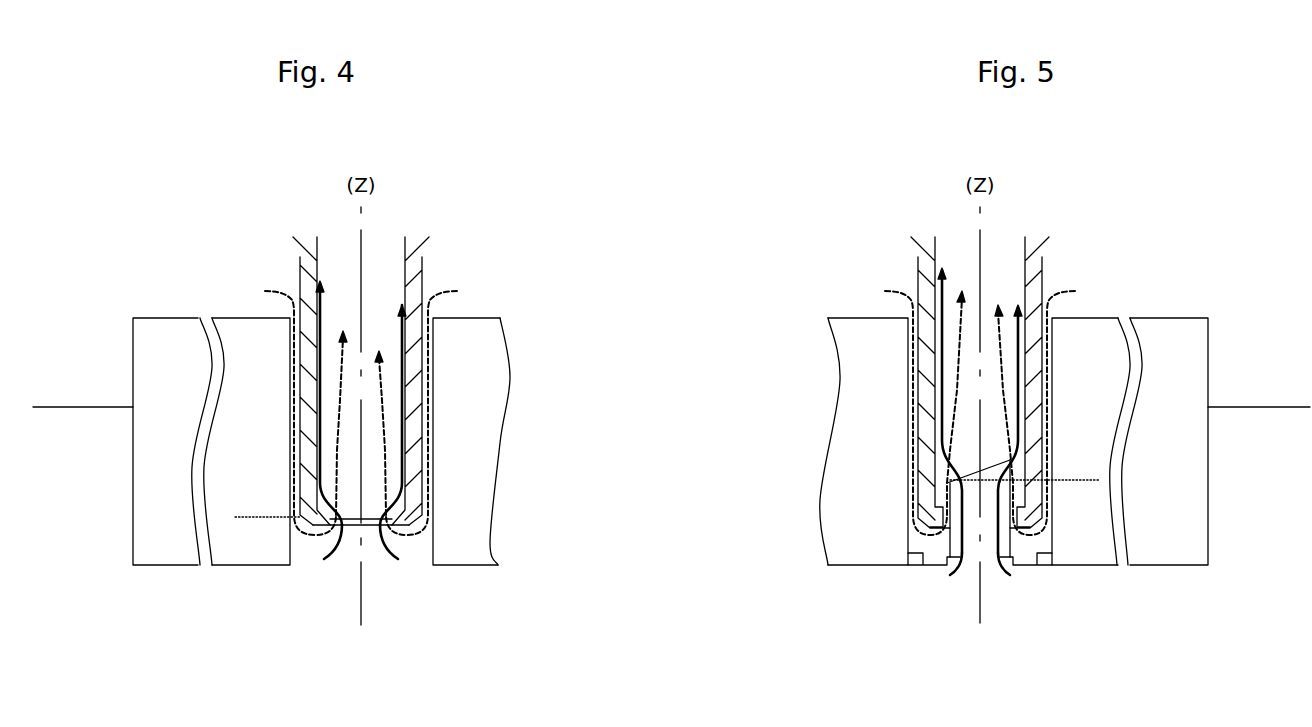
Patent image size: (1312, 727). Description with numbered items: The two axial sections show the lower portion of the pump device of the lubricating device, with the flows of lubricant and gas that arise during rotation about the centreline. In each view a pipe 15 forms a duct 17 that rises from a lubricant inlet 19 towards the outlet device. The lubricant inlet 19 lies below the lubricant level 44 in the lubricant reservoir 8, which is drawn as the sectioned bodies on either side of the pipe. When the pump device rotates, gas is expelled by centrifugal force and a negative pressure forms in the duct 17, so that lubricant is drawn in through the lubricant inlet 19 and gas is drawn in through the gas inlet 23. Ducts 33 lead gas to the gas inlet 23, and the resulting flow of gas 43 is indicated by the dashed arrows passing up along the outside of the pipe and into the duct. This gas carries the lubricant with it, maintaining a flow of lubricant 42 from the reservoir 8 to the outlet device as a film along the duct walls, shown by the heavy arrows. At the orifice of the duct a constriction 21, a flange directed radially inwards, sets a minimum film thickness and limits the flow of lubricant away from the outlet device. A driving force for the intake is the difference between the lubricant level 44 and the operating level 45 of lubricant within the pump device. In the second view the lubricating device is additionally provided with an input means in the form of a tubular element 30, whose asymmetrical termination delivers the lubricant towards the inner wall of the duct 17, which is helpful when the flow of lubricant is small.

In FIG. 4, the lubricant reservoir 8 is at (290, 441).
In FIG. 5, the lubricant reservoir 8 is at (1043, 441).
In FIG. 4, the pipe 15 is at (413, 392).
In FIG. 5, the pipe 15 is at (927, 378).
In FIG. 4, the duct 17 is at (377, 444).
In FIG. 5, the duct 17 is at (973, 400).
In FIG. 4, the lubricant inlet 19 is at (367, 535).
In FIG. 5, the lubricant inlet 19 is at (980, 545).
In FIG. 4, the constriction 21 is at (397, 517).
In FIG. 5, the constriction 21 is at (947, 523).
In FIG. 4, the gas inlet 23 is at (365, 530).
In FIG. 5, the gas inlet 23 is at (947, 527).
In FIG. 5, the tubular element 30 is at (975, 592).
In FIG. 4, the ducts 33 is at (430, 352).
In FIG. 5, the ducts 33 is at (913, 343).
In FIG. 4, the flow of lubricant 42 is at (322, 570).
In FIG. 5, the flow of lubricant 42 is at (1018, 582).
In FIG. 4, the flow of gas 43 is at (265, 289).
In FIG. 5, the flow of gas 43 is at (1075, 289).
In FIG. 4, the lubricant level 44 is at (83, 382).
In FIG. 5, the lubricant level 44 is at (1259, 382).
In FIG. 4, the operating level 45 is at (267, 492).
In FIG. 5, the operating level 45 is at (1025, 455).